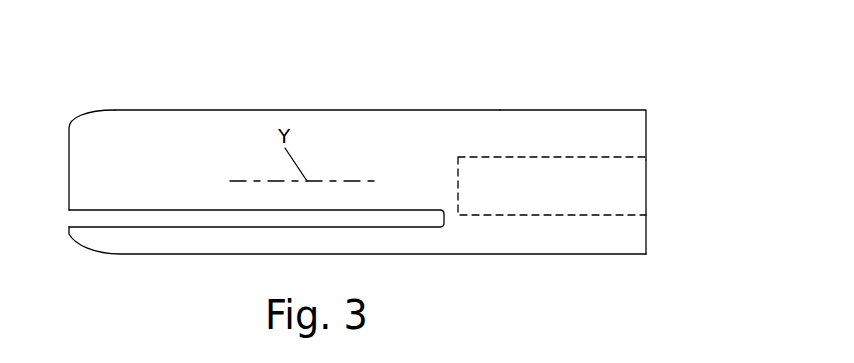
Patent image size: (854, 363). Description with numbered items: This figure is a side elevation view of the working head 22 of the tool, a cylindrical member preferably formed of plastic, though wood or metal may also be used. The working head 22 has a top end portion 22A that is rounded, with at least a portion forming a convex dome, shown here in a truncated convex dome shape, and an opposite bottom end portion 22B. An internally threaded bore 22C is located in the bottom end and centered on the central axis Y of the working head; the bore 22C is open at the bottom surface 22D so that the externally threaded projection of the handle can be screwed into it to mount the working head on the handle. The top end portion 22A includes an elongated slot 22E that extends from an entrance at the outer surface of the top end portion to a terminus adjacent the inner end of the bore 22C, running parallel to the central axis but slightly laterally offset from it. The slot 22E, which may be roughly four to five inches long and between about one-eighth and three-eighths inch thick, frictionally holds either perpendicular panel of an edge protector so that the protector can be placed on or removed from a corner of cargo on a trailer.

The working head 22 is at (397, 158).
The top end portion 22A is at (105, 139).
The bottom end portion 22B is at (617, 137).
The internally threaded bore 22C is at (522, 157).
The bottom surface 22D is at (646, 228).
The elongated slot 22E is at (155, 219).